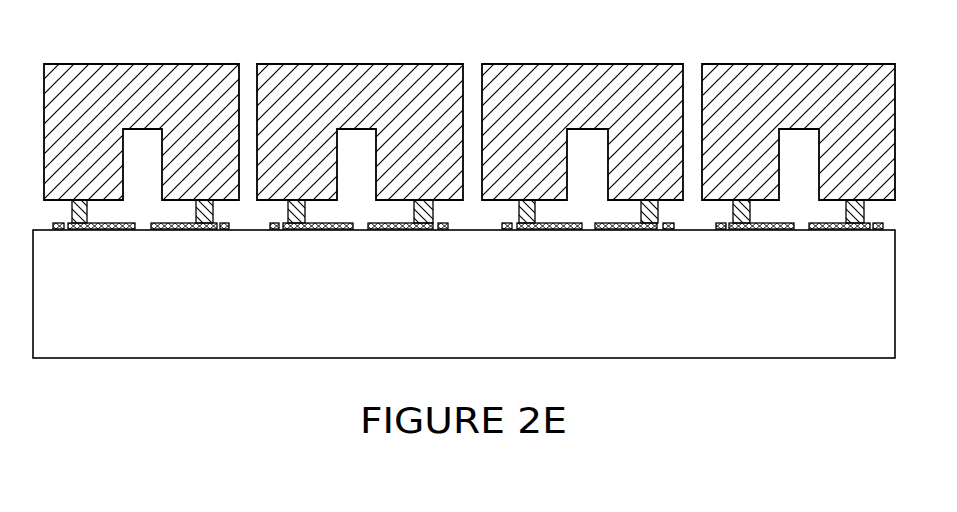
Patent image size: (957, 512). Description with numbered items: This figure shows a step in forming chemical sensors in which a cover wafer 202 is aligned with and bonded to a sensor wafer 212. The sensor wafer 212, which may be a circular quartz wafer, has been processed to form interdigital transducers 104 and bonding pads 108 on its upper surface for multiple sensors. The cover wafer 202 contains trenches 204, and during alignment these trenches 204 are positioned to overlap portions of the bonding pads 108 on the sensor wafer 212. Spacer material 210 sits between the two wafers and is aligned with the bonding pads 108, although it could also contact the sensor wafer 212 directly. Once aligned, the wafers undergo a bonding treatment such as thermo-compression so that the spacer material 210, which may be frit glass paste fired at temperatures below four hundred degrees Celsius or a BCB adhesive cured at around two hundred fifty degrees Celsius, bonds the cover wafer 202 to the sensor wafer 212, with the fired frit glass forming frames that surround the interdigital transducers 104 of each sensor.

The cover wafer 202 is at (137, 58).
The trenches 204 is at (587, 190).
The spacer material 210 is at (648, 218).
The bonding pads 108 is at (163, 240).
The interdigital transducers 104 is at (272, 240).
The sensor wafer 212 is at (887, 356).